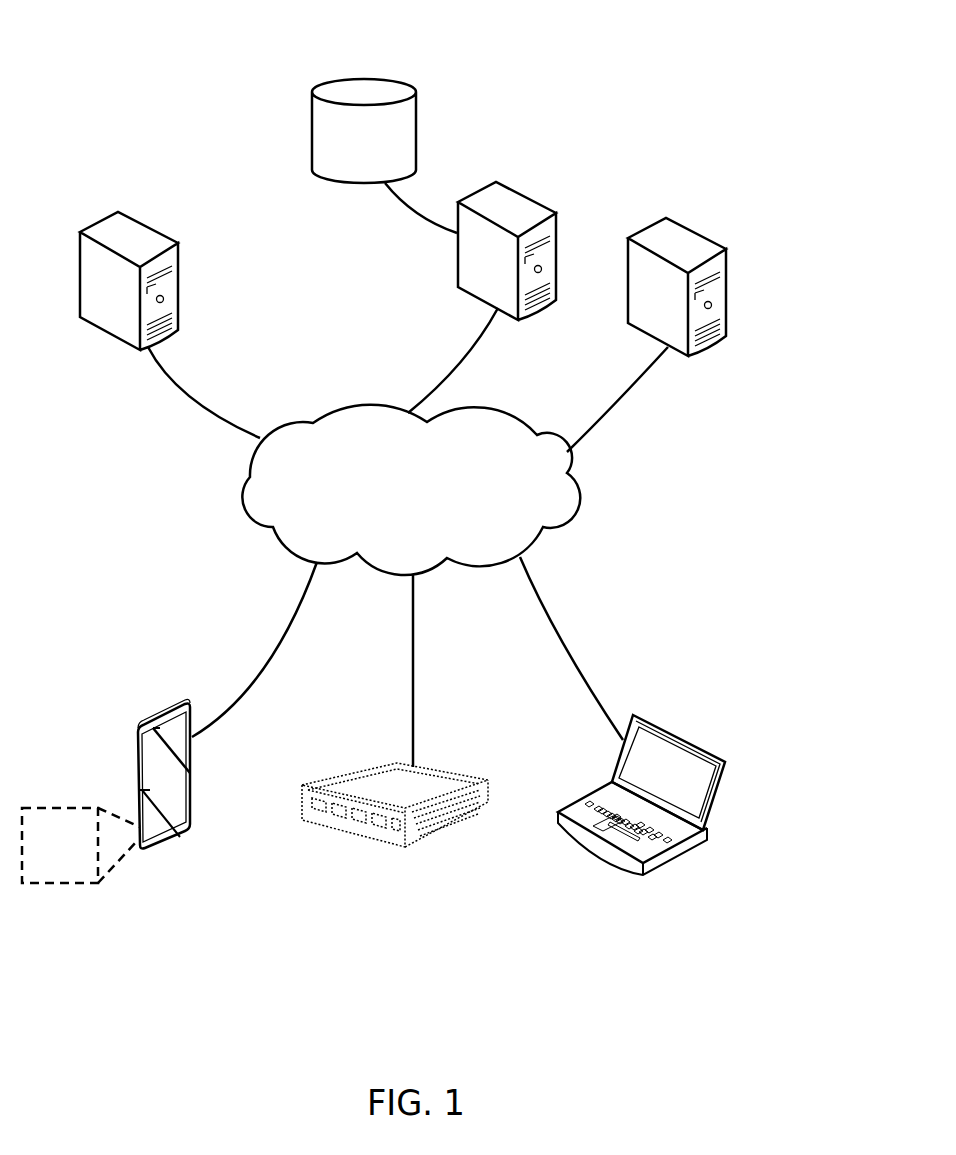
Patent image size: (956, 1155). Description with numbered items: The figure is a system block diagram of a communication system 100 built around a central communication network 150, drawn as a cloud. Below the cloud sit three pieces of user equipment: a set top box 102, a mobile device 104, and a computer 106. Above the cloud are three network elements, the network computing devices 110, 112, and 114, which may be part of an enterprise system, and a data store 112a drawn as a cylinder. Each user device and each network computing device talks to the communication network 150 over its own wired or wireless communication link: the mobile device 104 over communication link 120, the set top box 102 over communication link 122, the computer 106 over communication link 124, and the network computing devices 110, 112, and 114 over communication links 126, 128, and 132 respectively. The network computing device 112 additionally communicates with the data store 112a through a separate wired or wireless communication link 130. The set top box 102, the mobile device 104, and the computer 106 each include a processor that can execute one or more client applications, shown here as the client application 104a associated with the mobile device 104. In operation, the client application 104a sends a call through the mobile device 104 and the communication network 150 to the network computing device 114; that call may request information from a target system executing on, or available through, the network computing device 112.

The communication system 100 is at (76, 63).
The set top box 102 is at (400, 847).
The mobile device 104 is at (173, 833).
The client application 104a is at (81, 845).
The computer 106 is at (673, 858).
The network computing device 110 is at (137, 222).
The network computing device 112 is at (545, 202).
The data store 112a is at (364, 131).
The network computing device 114 is at (713, 242).
The communication link 120 is at (277, 652).
The communication link 122 is at (415, 647).
The communication link 124 is at (563, 643).
The communication link 126 is at (180, 388).
The communication link 128 is at (458, 363).
The communication link 130 is at (407, 213).
The communication link 132 is at (632, 400).
The communication network 150 is at (433, 531).